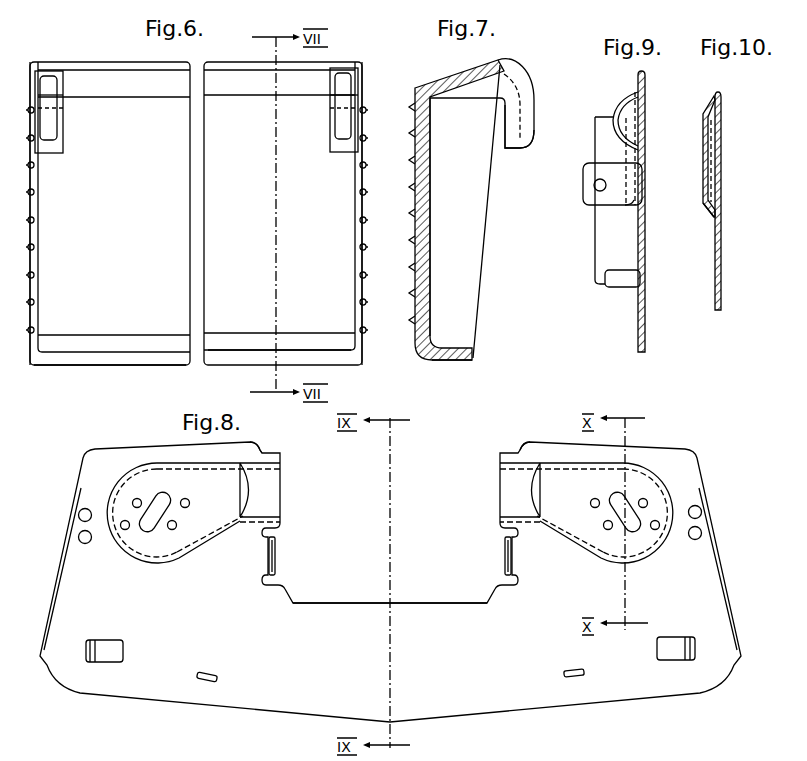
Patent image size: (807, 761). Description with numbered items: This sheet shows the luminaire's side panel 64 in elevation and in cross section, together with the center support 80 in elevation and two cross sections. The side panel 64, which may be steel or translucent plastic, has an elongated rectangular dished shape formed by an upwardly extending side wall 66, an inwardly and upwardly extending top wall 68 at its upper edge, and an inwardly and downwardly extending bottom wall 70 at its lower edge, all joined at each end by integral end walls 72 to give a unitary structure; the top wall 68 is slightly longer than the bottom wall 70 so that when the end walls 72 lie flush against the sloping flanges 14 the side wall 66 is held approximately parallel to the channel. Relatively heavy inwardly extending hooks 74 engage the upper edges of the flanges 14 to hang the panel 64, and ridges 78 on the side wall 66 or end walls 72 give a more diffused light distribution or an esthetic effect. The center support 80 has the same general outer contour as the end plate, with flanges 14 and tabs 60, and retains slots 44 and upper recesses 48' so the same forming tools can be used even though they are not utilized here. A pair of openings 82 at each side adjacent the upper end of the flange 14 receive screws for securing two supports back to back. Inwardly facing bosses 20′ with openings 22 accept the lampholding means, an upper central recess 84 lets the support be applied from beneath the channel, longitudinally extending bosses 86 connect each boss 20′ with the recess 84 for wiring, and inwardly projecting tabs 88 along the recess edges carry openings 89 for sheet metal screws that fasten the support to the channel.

In FIG. 9, the flange 14 is at (598, 262).
In FIG. 8, the flange 14 is at (72, 503).
In FIG. 9, the boss 20′ is at (633, 207).
In FIG. 10, the boss 20′ is at (705, 211).
In FIG. 8, the boss 20′ is at (158, 561).
In FIG. 10, the opening 22 is at (712, 165).
In FIG. 8, the opening 22 is at (142, 502).
In FIG. 8, the slot 44 is at (216, 678).
In FIG. 8, the upper recess 48' is at (390, 441).
In FIG. 9, the tab 60 is at (616, 288).
In FIG. 8, the tab 60 is at (86, 650).
In FIG. 6, the side panel 64 is at (318, 249).
In FIG. 7, the side panel 64 is at (476, 227).
In FIG. 7, the side wall 66 is at (430, 157).
In FIG. 6, the top wall 68 is at (237, 346).
In FIG. 7, the top wall 68 is at (492, 67).
In FIG. 6, the bottom wall 70 is at (138, 356).
In FIG. 7, the bottom wall 70 is at (460, 357).
In FIG. 6, the end wall 72 is at (35, 257).
In FIG. 7, the end wall 72 is at (486, 192).
In FIG. 6, the hook 74 is at (53, 128).
In FIG. 7, the hook 74 is at (527, 133).
In FIG. 6, the ridge 78 is at (30, 303).
In FIG. 7, the ridge 78 is at (415, 222).
In FIG. 9, the center support 80 is at (646, 332).
In FIG. 10, the center support 80 is at (722, 290).
In FIG. 8, the opening 82 is at (86, 544).
In FIG. 8, the upper central recess 84 is at (328, 603).
In FIG. 9, the longitudinally extending boss 86 is at (618, 105).
In FIG. 8, the longitudinally extending boss 86 is at (277, 497).
In FIG. 9, the inwardly projecting tab 88 is at (586, 200).
In FIG. 8, the inwardly projecting tab 88 is at (276, 562).
In FIG. 9, the opening 89 is at (594, 185).
In FIG. 8, the opening 89 is at (269, 561).